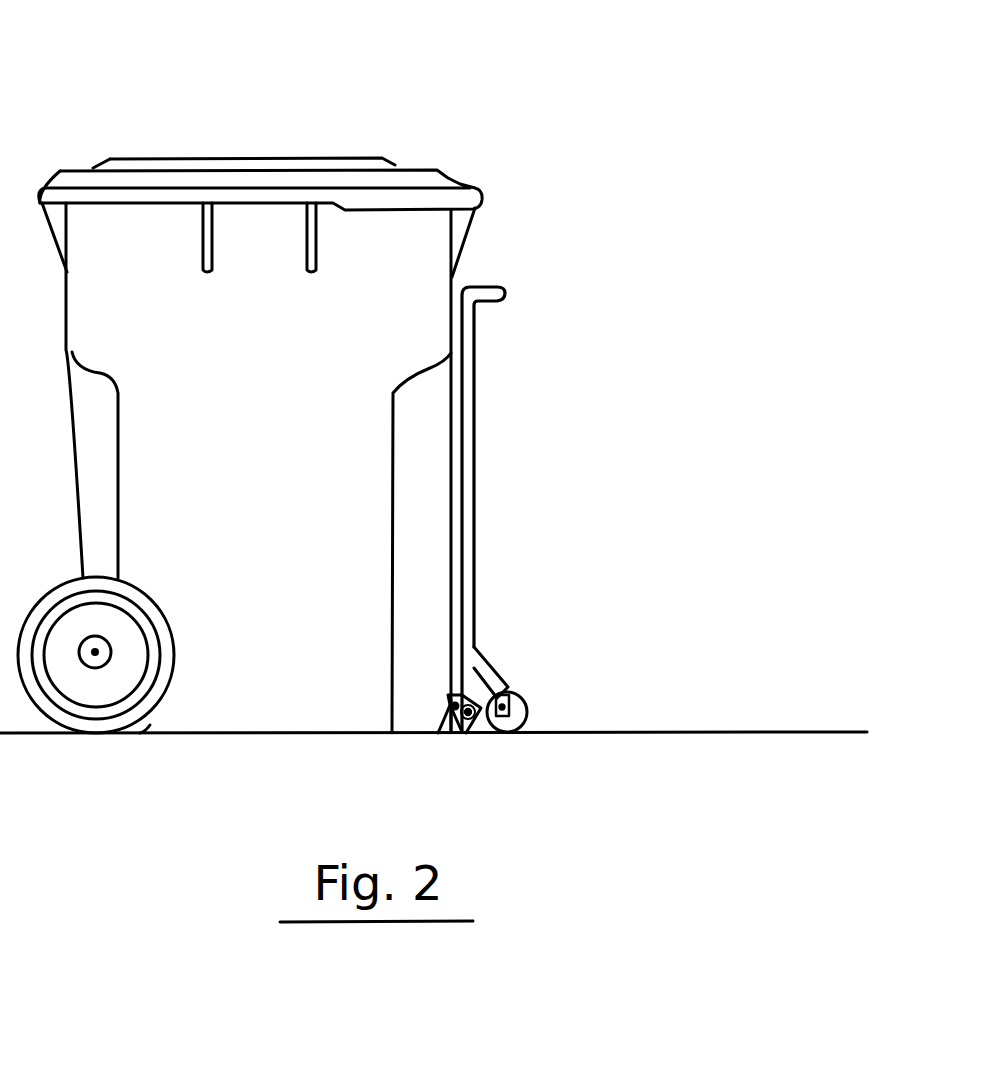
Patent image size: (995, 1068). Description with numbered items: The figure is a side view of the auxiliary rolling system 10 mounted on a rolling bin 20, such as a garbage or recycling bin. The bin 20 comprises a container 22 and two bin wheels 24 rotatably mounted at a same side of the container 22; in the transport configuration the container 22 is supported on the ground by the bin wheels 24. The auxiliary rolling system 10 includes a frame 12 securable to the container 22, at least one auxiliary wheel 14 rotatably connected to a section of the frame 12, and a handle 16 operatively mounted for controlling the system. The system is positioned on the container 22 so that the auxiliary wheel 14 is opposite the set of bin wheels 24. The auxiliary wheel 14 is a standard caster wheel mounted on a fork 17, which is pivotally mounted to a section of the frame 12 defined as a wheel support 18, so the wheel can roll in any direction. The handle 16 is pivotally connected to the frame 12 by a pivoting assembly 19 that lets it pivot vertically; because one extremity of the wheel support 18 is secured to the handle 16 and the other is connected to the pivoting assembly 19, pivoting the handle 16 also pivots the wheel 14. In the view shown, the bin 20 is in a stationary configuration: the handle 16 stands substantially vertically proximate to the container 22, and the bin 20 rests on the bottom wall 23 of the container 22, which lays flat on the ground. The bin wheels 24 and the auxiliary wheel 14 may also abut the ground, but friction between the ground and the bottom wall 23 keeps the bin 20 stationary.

The auxiliary rolling system 10 is at (580, 483).
The frame 12 is at (462, 727).
The auxiliary wheel 14 is at (513, 717).
The handle 16 is at (467, 430).
The fork 17 is at (510, 690).
The wheel support 18 is at (487, 672).
The pivoting assembly 19 is at (470, 727).
The bin 20 is at (208, 106).
The container 22 is at (400, 303).
The bottom wall 23 is at (242, 733).
The bin wheels 24 is at (90, 688).